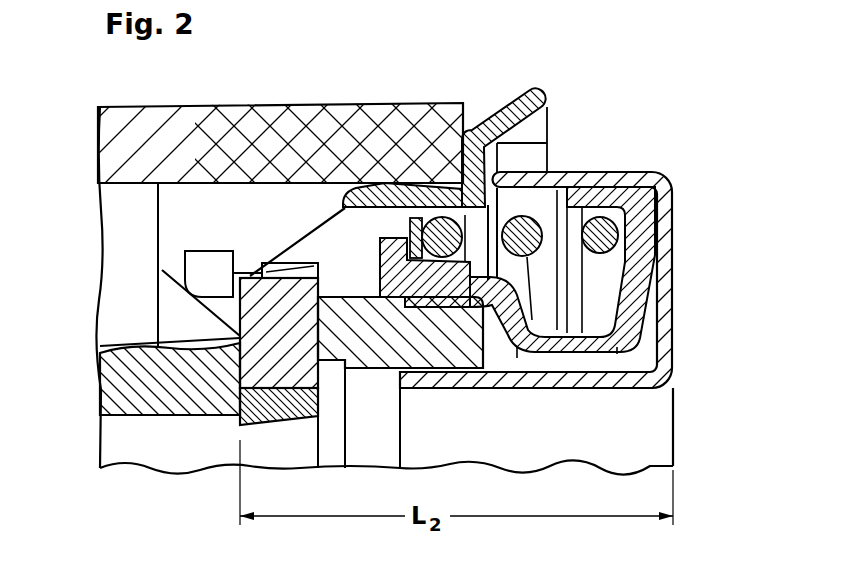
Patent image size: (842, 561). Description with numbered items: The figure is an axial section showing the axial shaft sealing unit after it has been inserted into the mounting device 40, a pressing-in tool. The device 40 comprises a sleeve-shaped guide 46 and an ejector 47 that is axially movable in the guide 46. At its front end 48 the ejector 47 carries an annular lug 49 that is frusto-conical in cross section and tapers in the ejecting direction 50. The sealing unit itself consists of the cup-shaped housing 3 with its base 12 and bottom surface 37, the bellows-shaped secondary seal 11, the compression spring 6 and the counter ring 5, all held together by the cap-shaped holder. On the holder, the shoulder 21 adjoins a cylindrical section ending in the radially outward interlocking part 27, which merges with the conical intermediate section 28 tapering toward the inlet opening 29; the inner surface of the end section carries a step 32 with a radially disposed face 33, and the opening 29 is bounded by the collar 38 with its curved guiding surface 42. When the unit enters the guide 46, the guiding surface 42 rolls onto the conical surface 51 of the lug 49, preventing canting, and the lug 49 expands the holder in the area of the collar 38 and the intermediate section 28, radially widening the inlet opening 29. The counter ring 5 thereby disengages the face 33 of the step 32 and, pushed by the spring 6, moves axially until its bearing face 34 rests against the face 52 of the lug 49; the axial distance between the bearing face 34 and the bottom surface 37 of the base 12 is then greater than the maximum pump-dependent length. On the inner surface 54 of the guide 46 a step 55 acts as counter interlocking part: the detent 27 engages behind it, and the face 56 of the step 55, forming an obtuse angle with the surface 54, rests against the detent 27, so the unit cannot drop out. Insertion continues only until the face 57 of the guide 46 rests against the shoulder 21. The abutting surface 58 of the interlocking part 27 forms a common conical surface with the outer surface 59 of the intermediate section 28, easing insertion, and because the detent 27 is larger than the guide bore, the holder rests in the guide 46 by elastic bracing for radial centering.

The housing 3 is at (615, 172).
The counter ring 5 is at (282, 425).
The compression spring 6 is at (523, 233).
The secondary seal 11 is at (590, 352).
The base of the housing 12 is at (666, 337).
The shoulder 21 is at (470, 160).
The interlocking part 27 is at (358, 196).
The conical intermediate section 28 is at (330, 217).
The inlet opening 29 is at (236, 306).
The step 32 is at (282, 262).
The face of the step 33 is at (292, 272).
The bearing face 34 is at (102, 348).
The bottom surface 37 is at (674, 263).
The collar 38 is at (210, 262).
The mounting device 40 is at (110, 106).
The guiding surface 42 is at (232, 297).
The guide 46 is at (147, 118).
The ejector 47 is at (128, 220).
The front end 48 is at (168, 201).
The annular lug 49 is at (173, 390).
The ejecting direction 50 is at (178, 520).
The conical surface 51 is at (160, 268).
The face of the lug 52 is at (240, 372).
The inner surface 54 is at (222, 185).
The step 55 is at (372, 203).
The face of the step 56 is at (388, 184).
The face of the guide 57 is at (464, 112).
The abutting surface 58 is at (333, 207).
The outer surface 59 is at (297, 183).